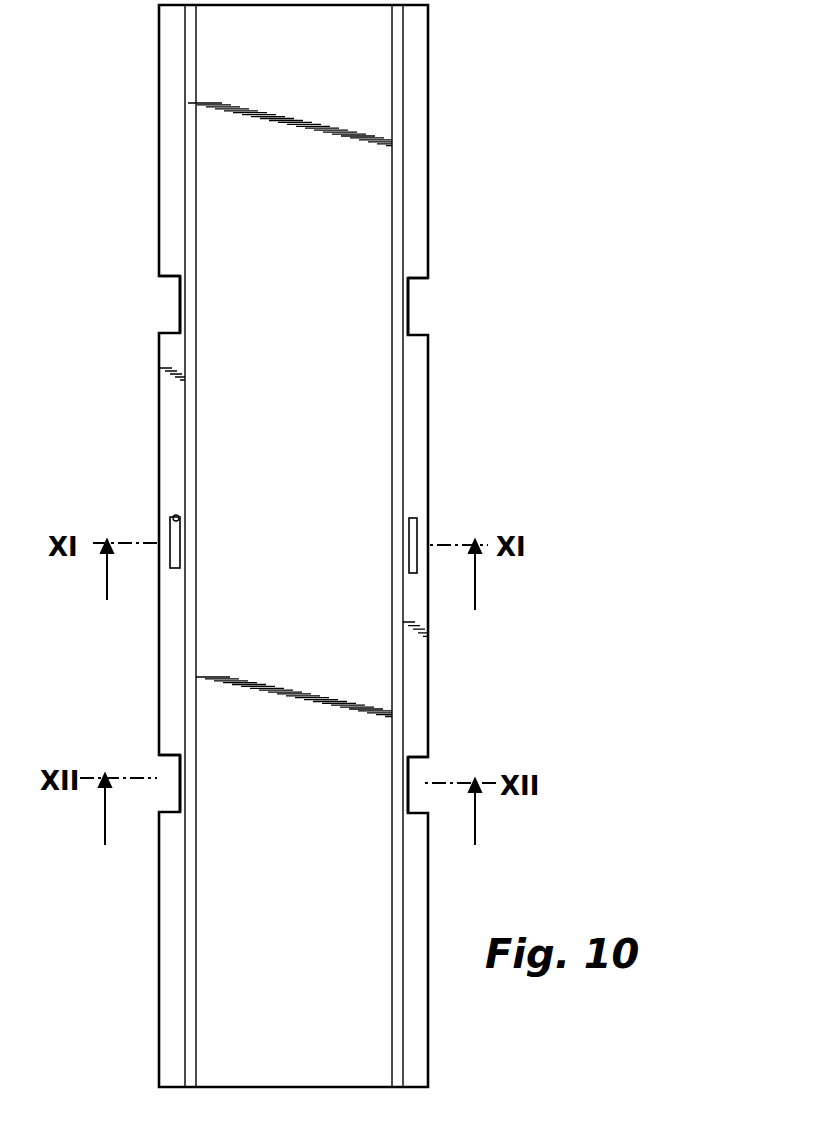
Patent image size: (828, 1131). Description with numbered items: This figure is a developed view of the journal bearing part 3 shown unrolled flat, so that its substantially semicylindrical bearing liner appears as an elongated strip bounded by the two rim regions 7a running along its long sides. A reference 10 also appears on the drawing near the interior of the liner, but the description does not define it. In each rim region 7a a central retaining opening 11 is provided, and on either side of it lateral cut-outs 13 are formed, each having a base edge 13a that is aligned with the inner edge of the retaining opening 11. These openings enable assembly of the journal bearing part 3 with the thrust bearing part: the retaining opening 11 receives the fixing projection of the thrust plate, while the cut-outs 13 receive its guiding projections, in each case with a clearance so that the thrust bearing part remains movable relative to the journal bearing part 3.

The journal bearing part 3 is at (446, 166).
The bore 10 is at (372, 218).
The rim region 7a is at (172, 443).
The lateral cut-out 13 is at (165, 318).
The base edge 13a is at (178, 295).
The central retaining opening 11 is at (170, 520).